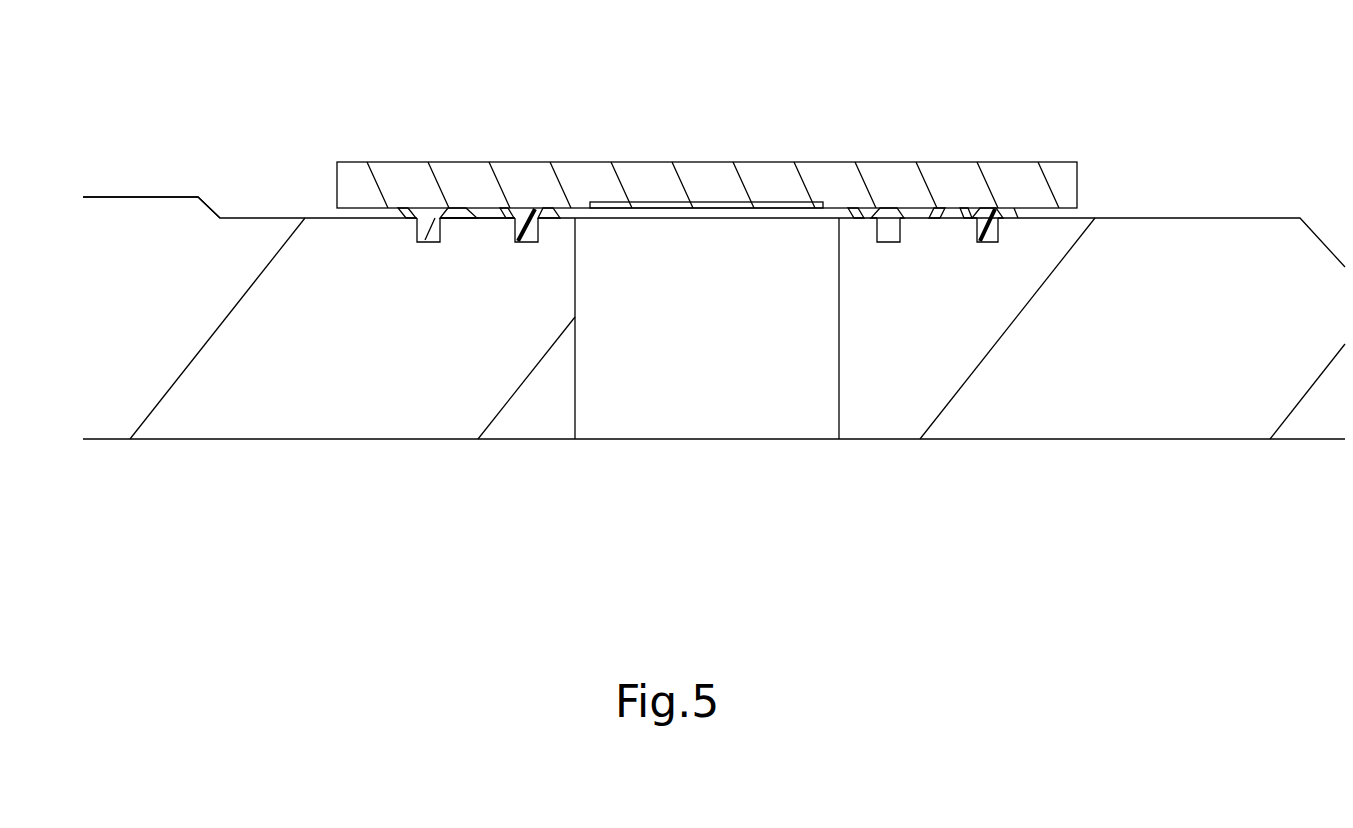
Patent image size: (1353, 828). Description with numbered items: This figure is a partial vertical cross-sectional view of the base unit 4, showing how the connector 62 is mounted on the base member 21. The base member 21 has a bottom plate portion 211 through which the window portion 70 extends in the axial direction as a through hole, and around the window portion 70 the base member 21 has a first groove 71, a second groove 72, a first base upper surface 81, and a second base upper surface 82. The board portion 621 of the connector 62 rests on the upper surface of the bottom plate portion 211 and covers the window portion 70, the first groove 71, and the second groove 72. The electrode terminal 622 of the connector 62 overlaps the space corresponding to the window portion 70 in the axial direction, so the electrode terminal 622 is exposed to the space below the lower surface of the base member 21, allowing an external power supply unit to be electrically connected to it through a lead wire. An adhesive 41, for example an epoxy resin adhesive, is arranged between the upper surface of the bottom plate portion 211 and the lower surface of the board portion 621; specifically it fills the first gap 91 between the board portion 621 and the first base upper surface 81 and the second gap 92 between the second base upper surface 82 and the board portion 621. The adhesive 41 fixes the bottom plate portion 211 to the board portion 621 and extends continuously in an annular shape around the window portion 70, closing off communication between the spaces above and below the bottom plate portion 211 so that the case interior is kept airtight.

The base unit 4 is at (240, 150).
The base member 21 is at (291, 462).
The bottom plate portion 211 is at (1132, 378).
The adhesive 41 is at (487, 213).
The connector 62 is at (707, 123).
The board portion 621 is at (595, 185).
The electrode terminal 622 is at (595, 83).
The window portion 70 is at (707, 358).
The first groove 71 is at (892, 209).
The second groove 72 is at (984, 224).
The first base upper surface 81 is at (945, 208).
The second base upper surface 82 is at (886, 222).
The first gap 91 is at (462, 208).
The second gap 92 is at (548, 208).